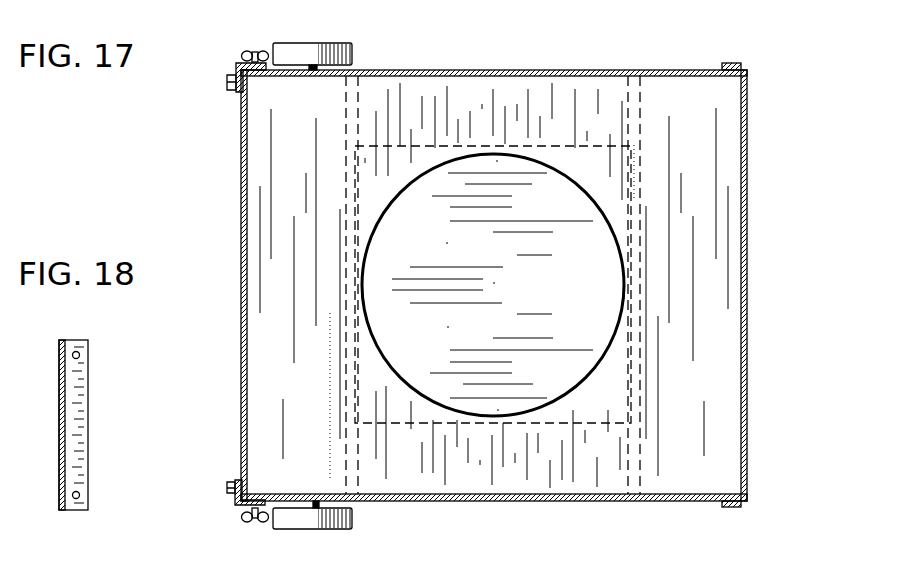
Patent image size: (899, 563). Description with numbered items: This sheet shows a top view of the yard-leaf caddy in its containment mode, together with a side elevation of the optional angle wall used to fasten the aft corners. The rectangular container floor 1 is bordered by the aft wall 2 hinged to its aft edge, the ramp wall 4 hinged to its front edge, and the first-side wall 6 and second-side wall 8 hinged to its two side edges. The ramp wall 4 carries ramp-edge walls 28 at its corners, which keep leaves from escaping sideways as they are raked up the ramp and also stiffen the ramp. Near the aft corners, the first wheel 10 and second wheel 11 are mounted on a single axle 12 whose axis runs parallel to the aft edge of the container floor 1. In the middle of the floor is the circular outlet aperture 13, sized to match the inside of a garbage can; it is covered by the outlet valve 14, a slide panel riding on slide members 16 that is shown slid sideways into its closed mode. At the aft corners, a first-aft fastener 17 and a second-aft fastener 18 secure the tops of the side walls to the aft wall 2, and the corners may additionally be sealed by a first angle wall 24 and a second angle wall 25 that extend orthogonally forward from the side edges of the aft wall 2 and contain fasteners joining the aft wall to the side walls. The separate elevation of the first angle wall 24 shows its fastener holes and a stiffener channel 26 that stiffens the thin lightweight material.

In FIG. 17, the container floor 1 is at (326, 121).
In FIG. 17, the aft wall 2 is at (243, 195).
In FIG. 17, the ramp wall 4 is at (747, 263).
In FIG. 17, the first-side wall 6 is at (480, 501).
In FIG. 17, the second-side wall 8 is at (491, 70).
In FIG. 17, the first wheel 10 is at (331, 524).
In FIG. 17, the second wheel 11 is at (346, 48).
In FIG. 17, the axle 12 is at (317, 64).
In FIG. 17, the outlet aperture 13 is at (600, 203).
In FIG. 17, the outlet valve 14 is at (548, 146).
In FIG. 17, the slide members 16 is at (346, 194).
In FIG. 17, the first-aft fastener 17 is at (249, 522).
In FIG. 17, the second-aft fastener 18 is at (245, 55).
In FIG. 17, the first angle wall 24 is at (236, 505).
In FIG. 18, the first angle wall 24 is at (89, 412).
In FIG. 17, the second angle wall 25 is at (237, 68).
In FIG. 18, the stiffener channel 26 is at (80, 355).
In FIG. 17, the ramp-edge walls 28 is at (735, 63).